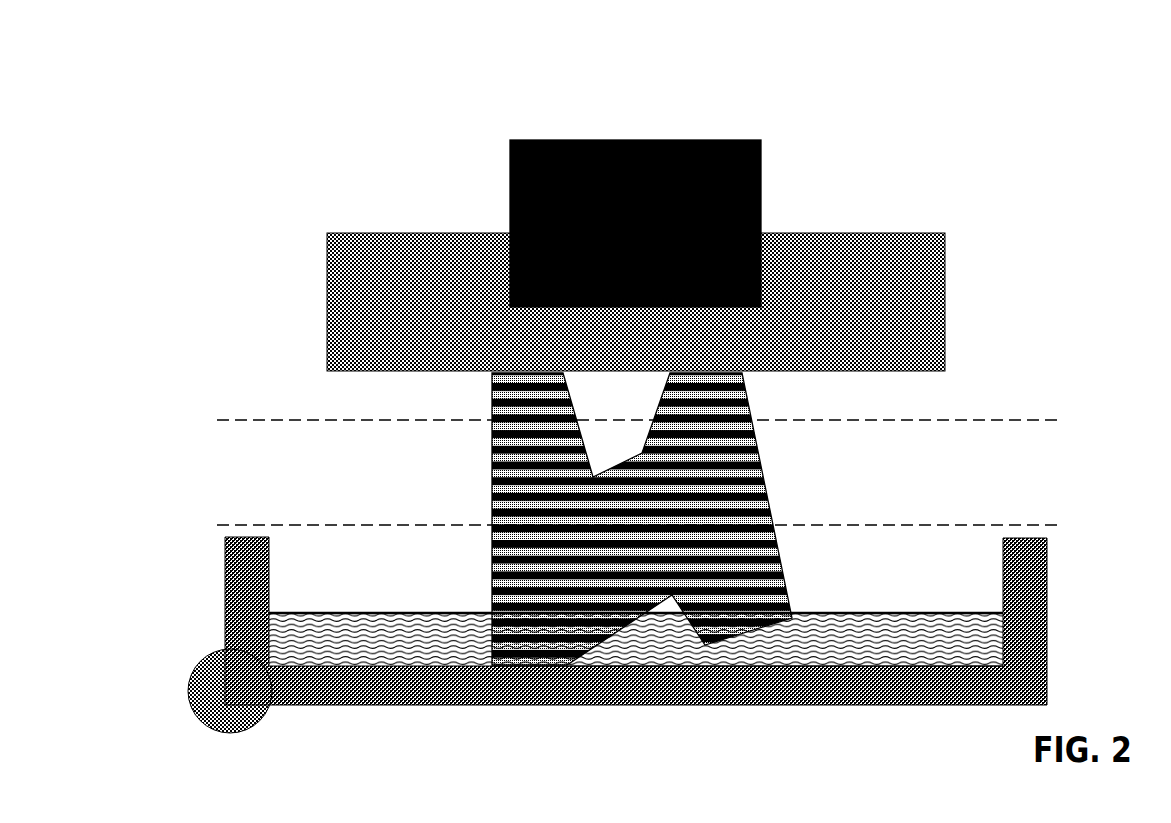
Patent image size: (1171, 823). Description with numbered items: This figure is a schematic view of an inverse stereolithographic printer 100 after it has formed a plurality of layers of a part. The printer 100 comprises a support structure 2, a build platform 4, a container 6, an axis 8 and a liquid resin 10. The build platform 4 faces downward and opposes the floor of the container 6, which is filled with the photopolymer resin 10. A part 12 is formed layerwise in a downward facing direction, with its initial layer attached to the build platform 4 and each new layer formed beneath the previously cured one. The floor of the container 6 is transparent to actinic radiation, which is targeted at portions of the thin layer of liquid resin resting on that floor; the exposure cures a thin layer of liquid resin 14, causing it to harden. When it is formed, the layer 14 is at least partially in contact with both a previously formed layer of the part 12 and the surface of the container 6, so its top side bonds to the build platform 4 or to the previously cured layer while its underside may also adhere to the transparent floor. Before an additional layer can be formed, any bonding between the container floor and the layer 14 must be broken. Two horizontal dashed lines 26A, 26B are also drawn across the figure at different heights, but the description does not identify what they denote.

The stereolithographic printer 100 is at (195, 108).
The support structure 2 is at (513, 128).
The build platform 4 is at (318, 225).
The container 6 is at (219, 536).
The axis 8 is at (232, 705).
The liquid resin 10 is at (430, 648).
The part 12 is at (490, 515).
The cured resin layer 14 is at (529, 671).
The first level line 26A is at (639, 410).
The second level line 26B is at (639, 516).